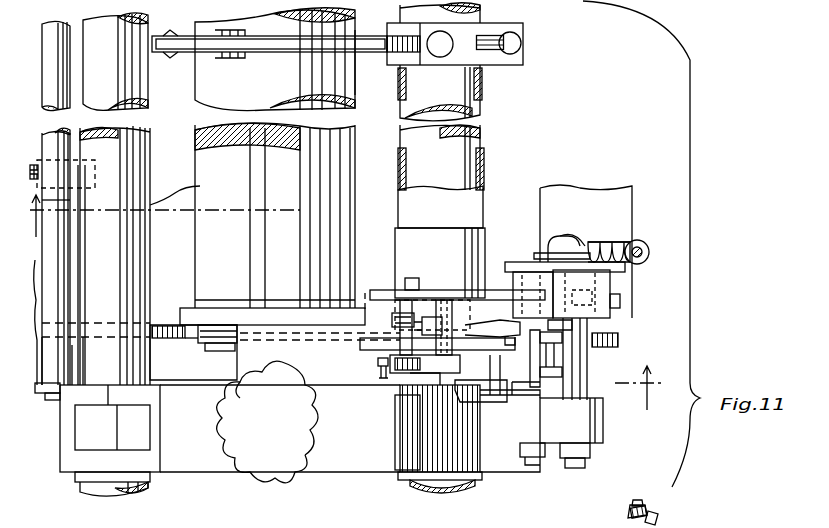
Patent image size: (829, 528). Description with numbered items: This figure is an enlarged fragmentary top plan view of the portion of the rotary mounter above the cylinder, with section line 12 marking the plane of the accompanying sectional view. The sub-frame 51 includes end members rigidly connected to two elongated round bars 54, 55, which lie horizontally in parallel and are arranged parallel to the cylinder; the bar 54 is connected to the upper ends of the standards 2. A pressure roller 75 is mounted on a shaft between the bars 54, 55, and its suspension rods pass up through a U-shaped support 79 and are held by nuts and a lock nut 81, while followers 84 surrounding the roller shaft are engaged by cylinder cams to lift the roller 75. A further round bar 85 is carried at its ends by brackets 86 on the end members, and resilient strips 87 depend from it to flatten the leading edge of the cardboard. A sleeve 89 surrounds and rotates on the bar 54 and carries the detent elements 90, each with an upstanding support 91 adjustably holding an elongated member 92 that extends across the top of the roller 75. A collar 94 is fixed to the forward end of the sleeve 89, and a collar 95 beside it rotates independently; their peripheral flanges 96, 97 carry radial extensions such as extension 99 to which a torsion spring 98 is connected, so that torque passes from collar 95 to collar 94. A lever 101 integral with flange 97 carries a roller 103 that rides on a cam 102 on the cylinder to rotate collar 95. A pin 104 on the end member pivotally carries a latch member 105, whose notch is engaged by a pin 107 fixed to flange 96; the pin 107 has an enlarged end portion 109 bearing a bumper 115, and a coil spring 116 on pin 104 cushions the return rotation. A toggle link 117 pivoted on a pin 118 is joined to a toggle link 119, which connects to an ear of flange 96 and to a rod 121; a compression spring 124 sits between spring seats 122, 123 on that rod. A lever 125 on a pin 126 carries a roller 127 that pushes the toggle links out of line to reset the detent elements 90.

The standard 2 is at (604, 437).
The section line 12— 12 is at (346, 302).
The sub-frame 51 is at (192, 495).
The round bar 54 is at (481, 105).
The round bar 55 is at (110, 487).
The pressure roller 75 is at (196, 230).
The U-shaped support 79 is at (350, 475).
The lock nut 81 is at (265, 465).
The follower 84 is at (208, 300).
The round bar 85 is at (52, 290).
The bracket 86 is at (48, 402).
The resilient strip 87 is at (75, 180).
The sleeve 89 is at (484, 164).
The detent element 90 is at (182, 81).
The upstanding support 91 is at (466, 56).
The elongated member 92 is at (374, 62).
The collar 94 is at (490, 236).
The collar 95 is at (387, 362).
The peripheral flange 96 is at (375, 293).
The peripheral flange 97 is at (472, 320).
The torsion spring 98 is at (492, 354).
The radial extension 99 is at (402, 300).
The lever 101 is at (303, 372).
The cam 102 is at (170, 343).
The roller 103 is at (195, 318).
The pin 104 is at (392, 380).
The latch member 105 is at (497, 379).
The pin 107 is at (430, 376).
The enlarged end portion 109 is at (445, 330).
The bumper 115 is at (410, 330).
The coil spring 116 is at (405, 310).
The toggle link 117 is at (612, 287).
The pin 118 is at (570, 464).
The toggle link 119 is at (512, 294).
The rod 121 is at (550, 258).
The spring seat 122 is at (639, 242).
The spring seat 123 is at (598, 252).
The compression spring 124 is at (618, 238).
The lever 125 is at (619, 340).
The pin 126 is at (540, 458).
The roller 127 is at (622, 303).